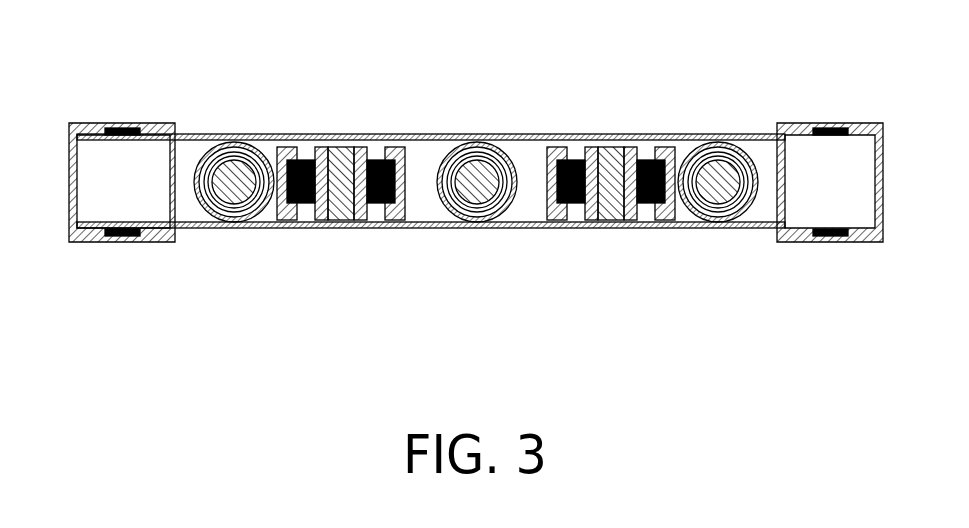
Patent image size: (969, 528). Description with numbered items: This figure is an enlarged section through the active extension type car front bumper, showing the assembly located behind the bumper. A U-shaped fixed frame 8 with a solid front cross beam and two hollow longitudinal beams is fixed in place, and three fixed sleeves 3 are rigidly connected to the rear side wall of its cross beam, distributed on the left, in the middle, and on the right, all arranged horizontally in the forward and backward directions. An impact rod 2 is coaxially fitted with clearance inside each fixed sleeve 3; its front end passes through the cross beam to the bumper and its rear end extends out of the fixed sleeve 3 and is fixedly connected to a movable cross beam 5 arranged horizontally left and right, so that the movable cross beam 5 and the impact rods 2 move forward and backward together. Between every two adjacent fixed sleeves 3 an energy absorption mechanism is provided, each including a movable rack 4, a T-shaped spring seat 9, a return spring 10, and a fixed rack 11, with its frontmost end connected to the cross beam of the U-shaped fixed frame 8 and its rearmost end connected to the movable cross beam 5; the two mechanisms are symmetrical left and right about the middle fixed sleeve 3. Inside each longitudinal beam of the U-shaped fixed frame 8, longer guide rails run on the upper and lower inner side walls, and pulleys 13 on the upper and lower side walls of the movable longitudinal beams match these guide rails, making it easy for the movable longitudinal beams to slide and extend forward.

The impact rod 2 is at (496, 152).
The fixed sleeve 3 is at (520, 190).
The movable rack 4 is at (647, 158).
The movable cross beam 5 is at (762, 152).
The U-shaped fixed frame 8 is at (817, 237).
The T-shaped spring seat 9 is at (553, 217).
The return spring 10 is at (378, 200).
The fixed rack 11 is at (350, 177).
The pulley 13 is at (112, 128).